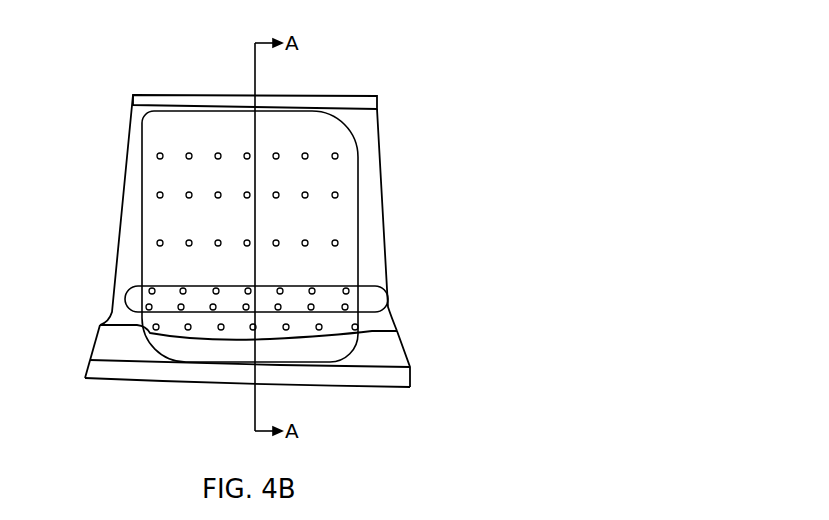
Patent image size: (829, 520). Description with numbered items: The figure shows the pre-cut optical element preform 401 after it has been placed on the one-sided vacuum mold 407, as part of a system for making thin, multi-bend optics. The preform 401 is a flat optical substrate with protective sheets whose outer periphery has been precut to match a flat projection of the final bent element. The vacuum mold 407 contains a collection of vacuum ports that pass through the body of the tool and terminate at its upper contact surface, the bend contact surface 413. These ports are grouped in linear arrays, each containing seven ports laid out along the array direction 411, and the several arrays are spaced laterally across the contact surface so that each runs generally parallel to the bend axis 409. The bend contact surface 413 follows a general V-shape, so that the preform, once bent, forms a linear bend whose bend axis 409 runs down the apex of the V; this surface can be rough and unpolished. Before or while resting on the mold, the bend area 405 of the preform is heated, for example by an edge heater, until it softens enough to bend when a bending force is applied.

The pre-cut optical element preform 401 is at (153, 95).
The one-sided vacuum mold 407 is at (377, 103).
The array direction 411 is at (58, 195).
The bend contact surface 413 is at (372, 237).
The bend axis 409 is at (58, 298).
The bend area 405 is at (387, 308).